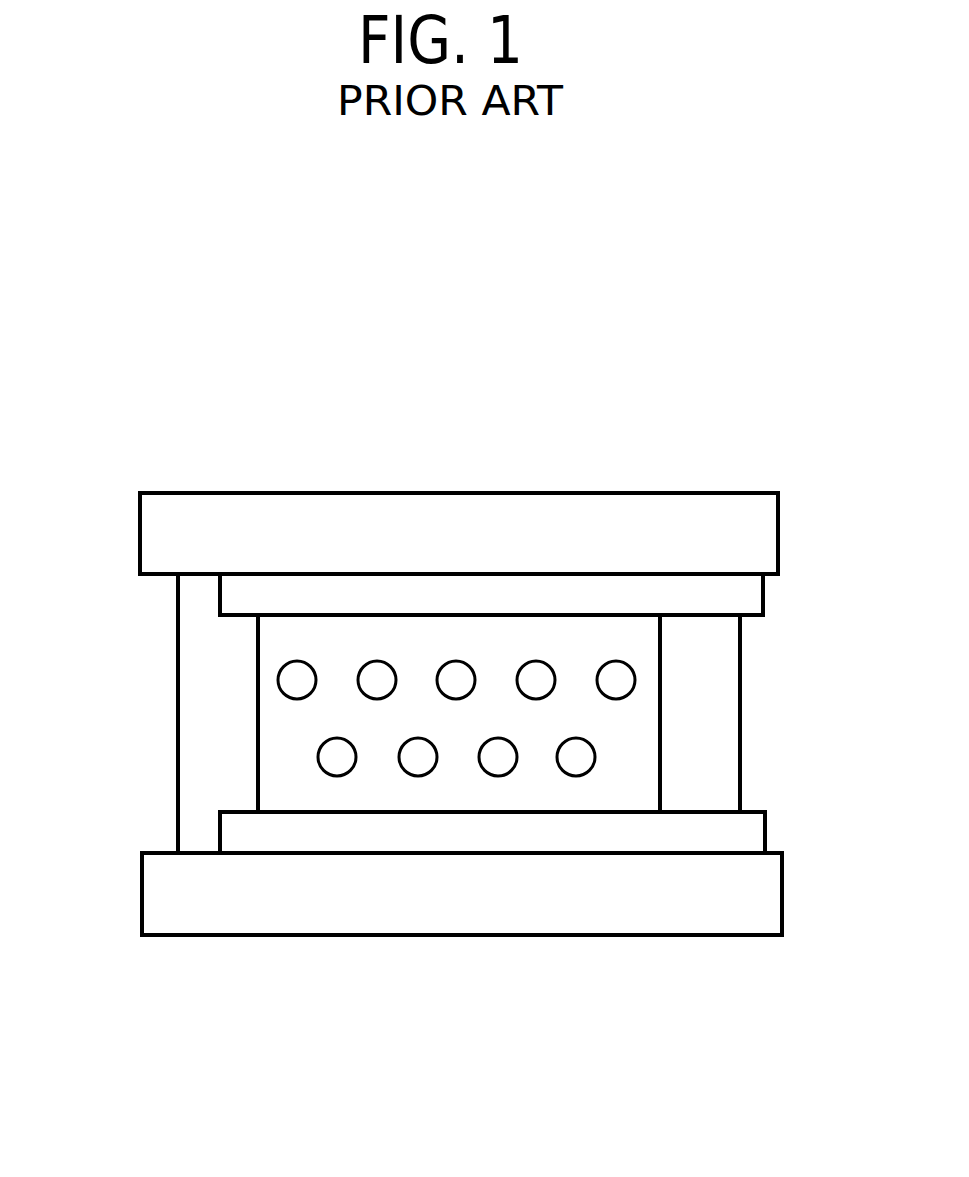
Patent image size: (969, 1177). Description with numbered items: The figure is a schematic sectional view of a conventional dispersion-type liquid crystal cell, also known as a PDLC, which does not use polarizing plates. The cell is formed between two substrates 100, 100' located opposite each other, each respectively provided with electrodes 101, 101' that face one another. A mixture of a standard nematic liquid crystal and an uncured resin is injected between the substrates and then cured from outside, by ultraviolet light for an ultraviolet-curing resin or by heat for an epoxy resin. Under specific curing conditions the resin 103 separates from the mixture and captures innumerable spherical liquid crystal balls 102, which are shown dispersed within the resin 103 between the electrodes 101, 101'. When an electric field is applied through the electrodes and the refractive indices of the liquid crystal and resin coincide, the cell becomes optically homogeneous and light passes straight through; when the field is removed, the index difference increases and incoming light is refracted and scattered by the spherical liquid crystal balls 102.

The substrate 100 is at (459, 479).
The substrate 100' is at (462, 963).
The electrode 101 is at (528, 515).
The electrode 101' is at (492, 932).
The spherical liquid crystal balls 102 is at (295, 673).
The resin 103 is at (280, 727).